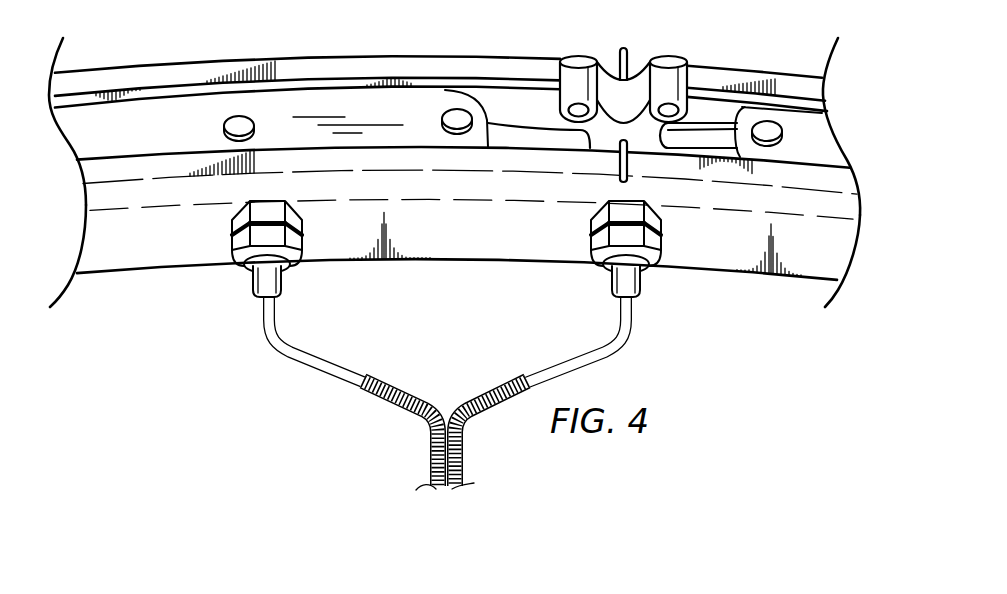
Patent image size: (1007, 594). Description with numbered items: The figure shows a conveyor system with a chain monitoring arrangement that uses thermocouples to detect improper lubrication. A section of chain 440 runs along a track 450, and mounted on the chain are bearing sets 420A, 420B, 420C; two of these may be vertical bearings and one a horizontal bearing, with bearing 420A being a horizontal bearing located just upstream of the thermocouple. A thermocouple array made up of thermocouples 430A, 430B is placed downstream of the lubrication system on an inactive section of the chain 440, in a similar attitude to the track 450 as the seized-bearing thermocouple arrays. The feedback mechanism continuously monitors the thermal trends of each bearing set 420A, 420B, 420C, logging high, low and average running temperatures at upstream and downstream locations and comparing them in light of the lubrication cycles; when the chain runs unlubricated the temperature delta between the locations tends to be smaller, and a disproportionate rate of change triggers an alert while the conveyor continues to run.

The track 450 is at (118, 117).
The chain 440 is at (105, 173).
The bearing 420A is at (240, 130).
The bearing set 420B is at (457, 118).
The bearing set 420C is at (770, 132).
The thermocouple 430A is at (290, 360).
The thermocouple 430B is at (608, 358).